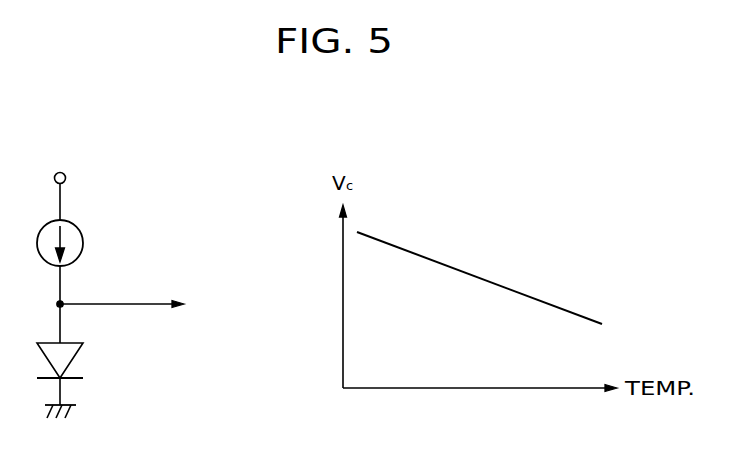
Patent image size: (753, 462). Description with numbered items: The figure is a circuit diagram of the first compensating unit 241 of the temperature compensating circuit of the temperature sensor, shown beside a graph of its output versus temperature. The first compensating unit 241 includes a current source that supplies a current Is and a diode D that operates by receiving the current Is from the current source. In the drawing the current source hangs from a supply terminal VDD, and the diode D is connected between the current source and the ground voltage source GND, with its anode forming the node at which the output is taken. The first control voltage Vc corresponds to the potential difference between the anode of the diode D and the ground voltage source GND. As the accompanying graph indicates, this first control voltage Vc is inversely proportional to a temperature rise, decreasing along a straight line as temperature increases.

The first compensating unit 241 is at (148, 229).
The supply voltage terminal VDD is at (59, 180).
The current Is is at (70, 243).
The first control voltage Vc is at (134, 305).
The diode D is at (70, 360).
The ground voltage source GND is at (60, 428).